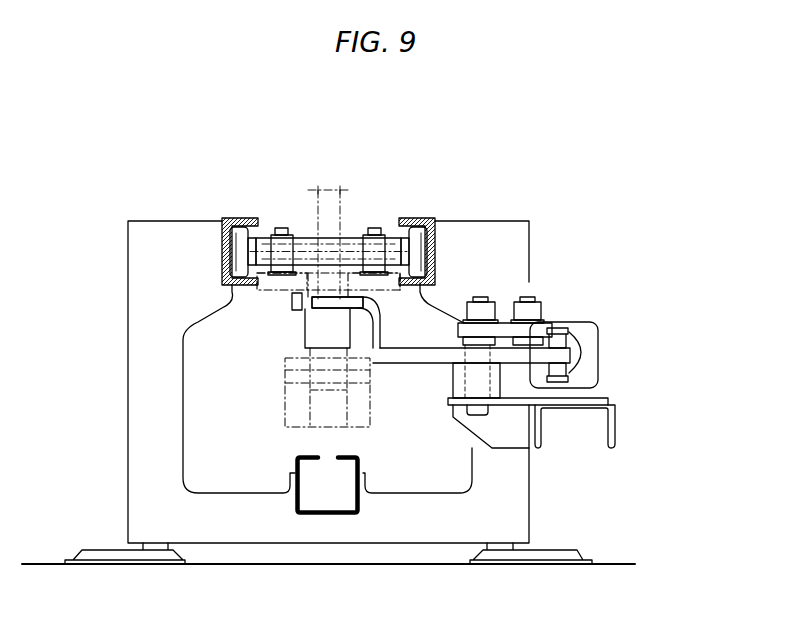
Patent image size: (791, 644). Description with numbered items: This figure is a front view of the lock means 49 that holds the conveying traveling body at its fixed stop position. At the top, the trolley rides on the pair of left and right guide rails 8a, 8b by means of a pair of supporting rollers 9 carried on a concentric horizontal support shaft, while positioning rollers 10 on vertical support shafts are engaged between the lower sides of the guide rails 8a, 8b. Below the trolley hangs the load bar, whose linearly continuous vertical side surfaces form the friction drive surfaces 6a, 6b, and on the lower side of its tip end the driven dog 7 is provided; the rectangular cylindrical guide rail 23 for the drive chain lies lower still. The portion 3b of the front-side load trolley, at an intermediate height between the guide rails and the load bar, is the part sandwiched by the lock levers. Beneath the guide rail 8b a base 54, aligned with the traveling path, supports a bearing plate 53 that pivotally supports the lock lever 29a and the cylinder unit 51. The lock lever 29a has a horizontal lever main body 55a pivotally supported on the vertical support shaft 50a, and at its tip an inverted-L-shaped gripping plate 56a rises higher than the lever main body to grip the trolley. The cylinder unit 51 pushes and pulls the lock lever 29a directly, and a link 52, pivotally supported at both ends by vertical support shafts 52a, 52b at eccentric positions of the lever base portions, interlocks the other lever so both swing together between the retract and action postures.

The rectangular cylindrical guide rail 23 is at (328, 515).
The guide rail 8a is at (235, 217).
The guide rail 8b is at (420, 218).
The supporting roller 9 is at (235, 248).
The portion of the front-side load trolley 3b is at (318, 290).
The positioning roller 10 is at (273, 287).
The friction drive surface 6a is at (303, 338).
The lock lever 29a is at (335, 290).
The gripping plate 56a is at (343, 306).
The friction drive surface 6b is at (382, 323).
The driven dog 7 is at (286, 415).
The lock means 49 is at (539, 323).
The lever main body 55a is at (422, 362).
The link 52 is at (503, 335).
The vertical support shaft 52b is at (488, 297).
The vertical support shaft 52a is at (528, 297).
The cylinder unit 51 is at (596, 340).
The vertical support shaft 50a is at (474, 413).
The bearing plate 53 is at (567, 399).
The base 54 is at (615, 425).